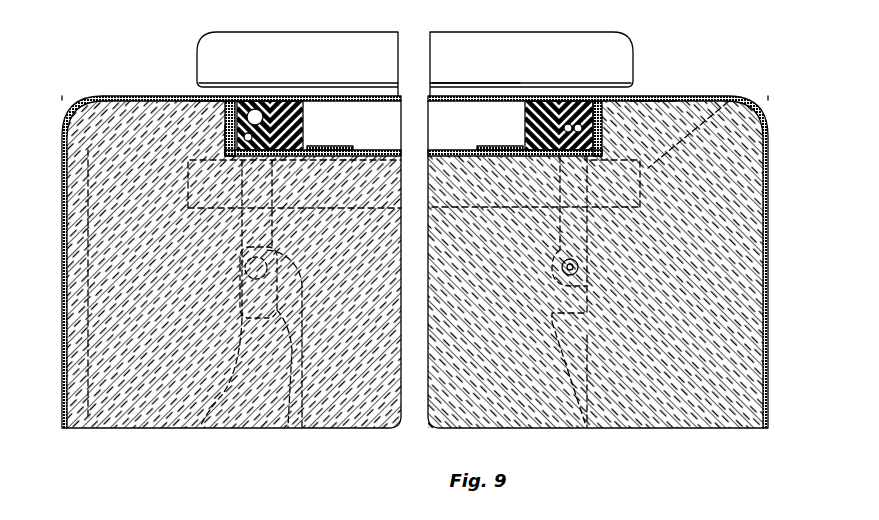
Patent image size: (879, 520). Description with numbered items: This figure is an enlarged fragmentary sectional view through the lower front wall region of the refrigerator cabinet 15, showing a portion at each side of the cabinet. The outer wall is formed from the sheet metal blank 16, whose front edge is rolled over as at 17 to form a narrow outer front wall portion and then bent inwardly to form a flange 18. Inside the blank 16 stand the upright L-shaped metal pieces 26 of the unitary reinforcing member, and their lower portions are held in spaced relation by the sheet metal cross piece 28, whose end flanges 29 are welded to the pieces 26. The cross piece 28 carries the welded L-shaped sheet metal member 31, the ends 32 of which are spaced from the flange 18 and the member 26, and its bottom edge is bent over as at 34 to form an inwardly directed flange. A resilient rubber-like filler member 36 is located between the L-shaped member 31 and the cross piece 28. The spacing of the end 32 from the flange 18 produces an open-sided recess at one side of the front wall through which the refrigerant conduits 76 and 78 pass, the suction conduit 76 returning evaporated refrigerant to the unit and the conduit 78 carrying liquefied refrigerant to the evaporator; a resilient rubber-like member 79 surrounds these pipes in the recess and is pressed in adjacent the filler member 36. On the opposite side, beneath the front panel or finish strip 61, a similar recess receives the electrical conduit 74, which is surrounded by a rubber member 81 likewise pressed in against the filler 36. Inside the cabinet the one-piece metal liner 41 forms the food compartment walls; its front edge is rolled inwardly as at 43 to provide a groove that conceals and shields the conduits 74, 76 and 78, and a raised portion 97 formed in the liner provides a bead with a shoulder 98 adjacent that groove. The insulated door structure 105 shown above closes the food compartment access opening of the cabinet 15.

The refrigerator cabinet 15 is at (76, 100).
The sheet metal blank 16 is at (62, 260).
The front wall portion 17 is at (128, 93).
The flange 18 is at (226, 110).
The upright L-shaped metal pieces 26 is at (203, 107).
The sheet metal cross piece 28 is at (448, 148).
The end flanges 29 is at (223, 132).
The L-shaped sheet metal member 31 is at (325, 147).
The ends of L-shaped member 32 is at (306, 118).
The inwardly directed flange 34 is at (729, 101).
The resilient rubber-like filler member 36 is at (286, 110).
The metal liner 41 is at (222, 430).
The inwardly bent edge 43 is at (302, 428).
The front panel 61 is at (470, 93).
The electrical conduit 74 is at (581, 124).
The suction conduit 76 is at (258, 110).
The liquid refrigerant conduit 78 is at (248, 133).
The resilient rubber-like member 79 is at (266, 122).
The rubber member 81 is at (567, 124).
The raised portion 97 is at (203, 428).
The shoulder 98 is at (270, 428).
The insulated door structure 105 is at (350, 46).